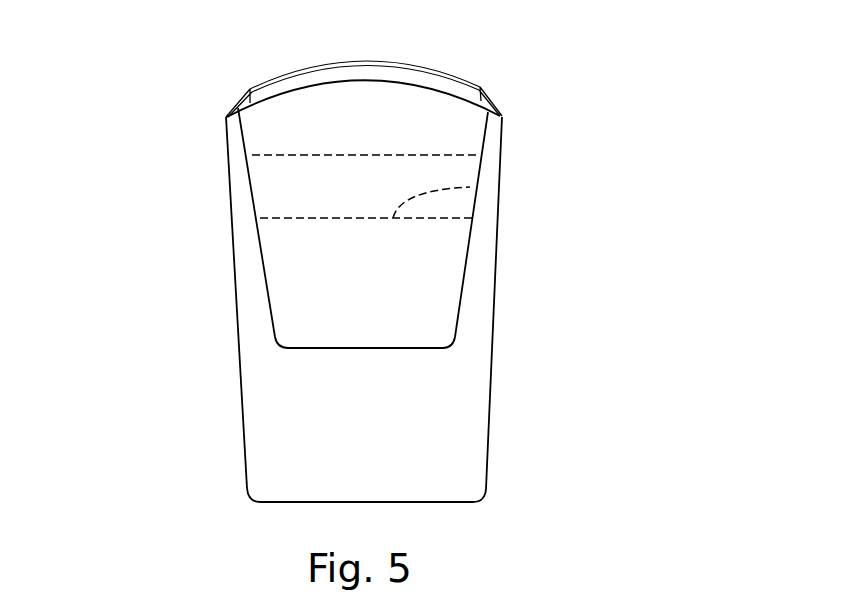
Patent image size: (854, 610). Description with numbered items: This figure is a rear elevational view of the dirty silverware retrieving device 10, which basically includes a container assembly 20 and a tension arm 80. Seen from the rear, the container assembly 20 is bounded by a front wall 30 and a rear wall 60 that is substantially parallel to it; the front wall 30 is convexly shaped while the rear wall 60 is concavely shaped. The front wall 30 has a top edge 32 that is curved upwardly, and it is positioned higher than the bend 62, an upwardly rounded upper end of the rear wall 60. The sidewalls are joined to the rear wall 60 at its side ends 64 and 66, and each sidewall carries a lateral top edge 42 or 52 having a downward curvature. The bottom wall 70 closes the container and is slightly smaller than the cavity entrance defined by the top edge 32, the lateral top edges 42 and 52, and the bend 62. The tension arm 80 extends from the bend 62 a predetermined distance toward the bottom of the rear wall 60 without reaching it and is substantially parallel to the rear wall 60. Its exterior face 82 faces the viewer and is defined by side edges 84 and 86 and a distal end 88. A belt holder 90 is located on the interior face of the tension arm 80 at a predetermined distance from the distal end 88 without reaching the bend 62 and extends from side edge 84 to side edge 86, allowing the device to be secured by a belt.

The dirty silverware retrieving device 10 is at (657, 119).
The container assembly 20 is at (226, 338).
The front wall 30 is at (387, 73).
The top edge 32 is at (353, 60).
The lateral top edge 42 is at (233, 110).
The lateral top edge 52 is at (502, 115).
The rear wall 60 is at (355, 422).
The bend 62 is at (438, 87).
The side end 64 is at (232, 228).
The side end 66 is at (493, 365).
The bottom wall 70 is at (422, 502).
The tension arm 80 is at (481, 256).
The exterior face 82 is at (352, 287).
The side edge 84 is at (253, 185).
The side edge 86 is at (458, 304).
The distal end 88 is at (333, 348).
The belt holder 90 is at (470, 187).